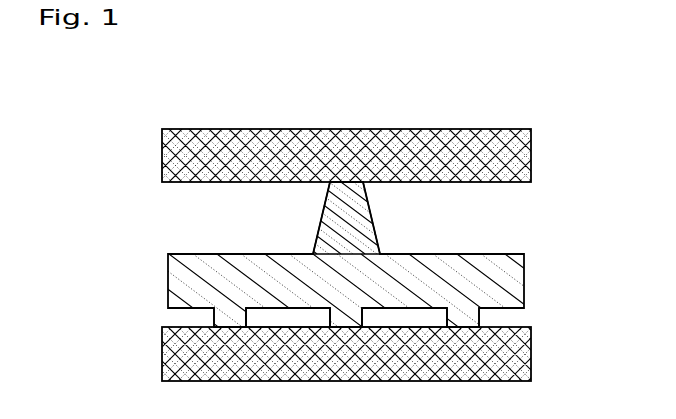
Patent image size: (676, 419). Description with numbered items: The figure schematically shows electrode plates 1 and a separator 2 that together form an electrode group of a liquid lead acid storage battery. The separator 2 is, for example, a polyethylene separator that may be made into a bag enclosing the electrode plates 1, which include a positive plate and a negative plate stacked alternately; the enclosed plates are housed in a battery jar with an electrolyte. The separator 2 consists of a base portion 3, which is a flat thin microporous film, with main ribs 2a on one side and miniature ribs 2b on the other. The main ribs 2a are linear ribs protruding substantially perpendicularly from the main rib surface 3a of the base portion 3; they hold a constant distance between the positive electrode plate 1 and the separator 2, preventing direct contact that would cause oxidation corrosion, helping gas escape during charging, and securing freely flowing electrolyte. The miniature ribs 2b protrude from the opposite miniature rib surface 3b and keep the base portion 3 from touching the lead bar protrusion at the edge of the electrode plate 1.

The electrode plate 1 is at (487, 133).
The separator 2 is at (373, 254).
The main ribs 2a is at (366, 233).
The miniature ribs 2b is at (214, 308).
The base portion 3 is at (479, 257).
The main rib surface 3a is at (203, 254).
The miniature rib surface 3b is at (503, 316).